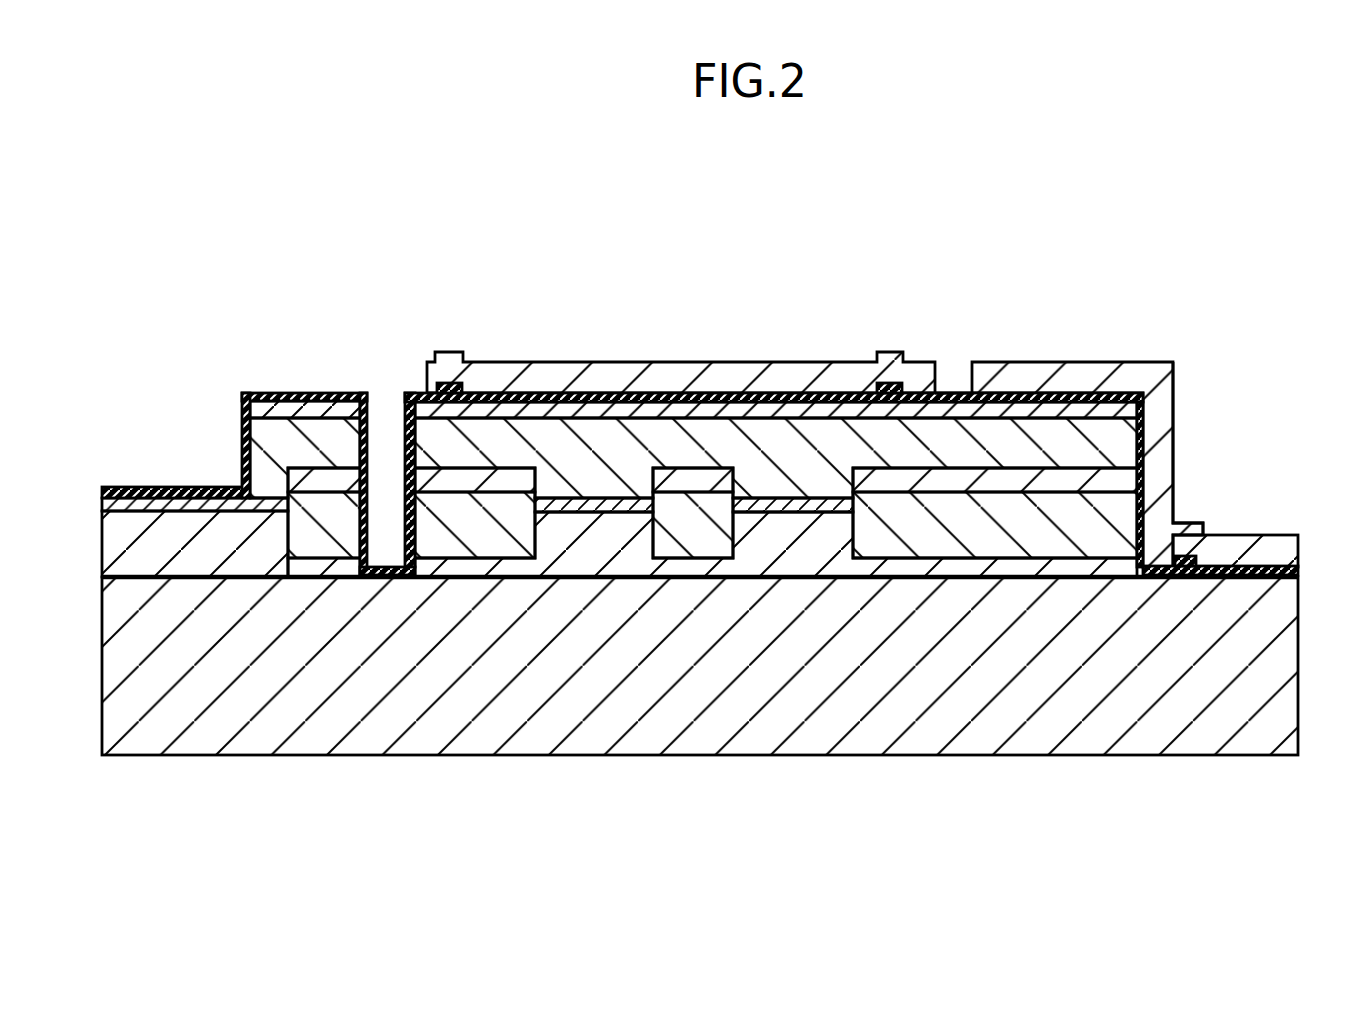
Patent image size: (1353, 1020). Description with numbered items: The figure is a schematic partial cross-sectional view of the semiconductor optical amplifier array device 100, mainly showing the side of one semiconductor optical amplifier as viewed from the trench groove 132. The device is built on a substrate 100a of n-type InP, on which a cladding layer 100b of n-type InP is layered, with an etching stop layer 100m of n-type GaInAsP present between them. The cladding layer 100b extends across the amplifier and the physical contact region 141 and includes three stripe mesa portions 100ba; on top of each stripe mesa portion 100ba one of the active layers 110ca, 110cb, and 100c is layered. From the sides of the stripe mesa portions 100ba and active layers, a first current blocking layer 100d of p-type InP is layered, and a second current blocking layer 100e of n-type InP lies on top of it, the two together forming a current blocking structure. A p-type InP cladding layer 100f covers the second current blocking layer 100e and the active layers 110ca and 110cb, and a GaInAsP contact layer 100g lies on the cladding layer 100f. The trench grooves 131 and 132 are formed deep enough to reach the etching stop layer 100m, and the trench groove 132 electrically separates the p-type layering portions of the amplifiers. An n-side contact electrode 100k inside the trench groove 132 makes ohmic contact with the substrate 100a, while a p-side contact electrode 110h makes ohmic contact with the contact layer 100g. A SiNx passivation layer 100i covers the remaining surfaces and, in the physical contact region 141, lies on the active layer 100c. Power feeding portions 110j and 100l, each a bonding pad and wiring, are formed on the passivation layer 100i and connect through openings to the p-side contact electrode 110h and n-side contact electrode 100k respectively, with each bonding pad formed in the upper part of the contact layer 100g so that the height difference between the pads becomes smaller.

The semiconductor optical amplifier array device 100 is at (1205, 252).
The trench groove 132 is at (1200, 350).
The physical contact region 141 is at (153, 487).
The active layer 100c is at (205, 497).
The trench groove 131 is at (378, 440).
The cladding layer 100f is at (497, 440).
The active layer 110ca is at (591, 503).
The p-side contact electrode 110h is at (681, 403).
The active layer 110cb is at (767, 505).
The power feeding portion 110j is at (838, 372).
The passivation layer 100i is at (948, 392).
The second current blocking layer 100e is at (1040, 480).
The contact layer 100g is at (1096, 410).
The power feeding portion 100l is at (1163, 412).
The n-side contact electrode 100k is at (1277, 566).
The etching stop layer 100m is at (143, 580).
The stripe mesa portion 100ba is at (282, 540).
The cladding layer 100b is at (628, 547).
The first current blocking layer 100d is at (1025, 547).
The substrate 100a is at (1188, 745).